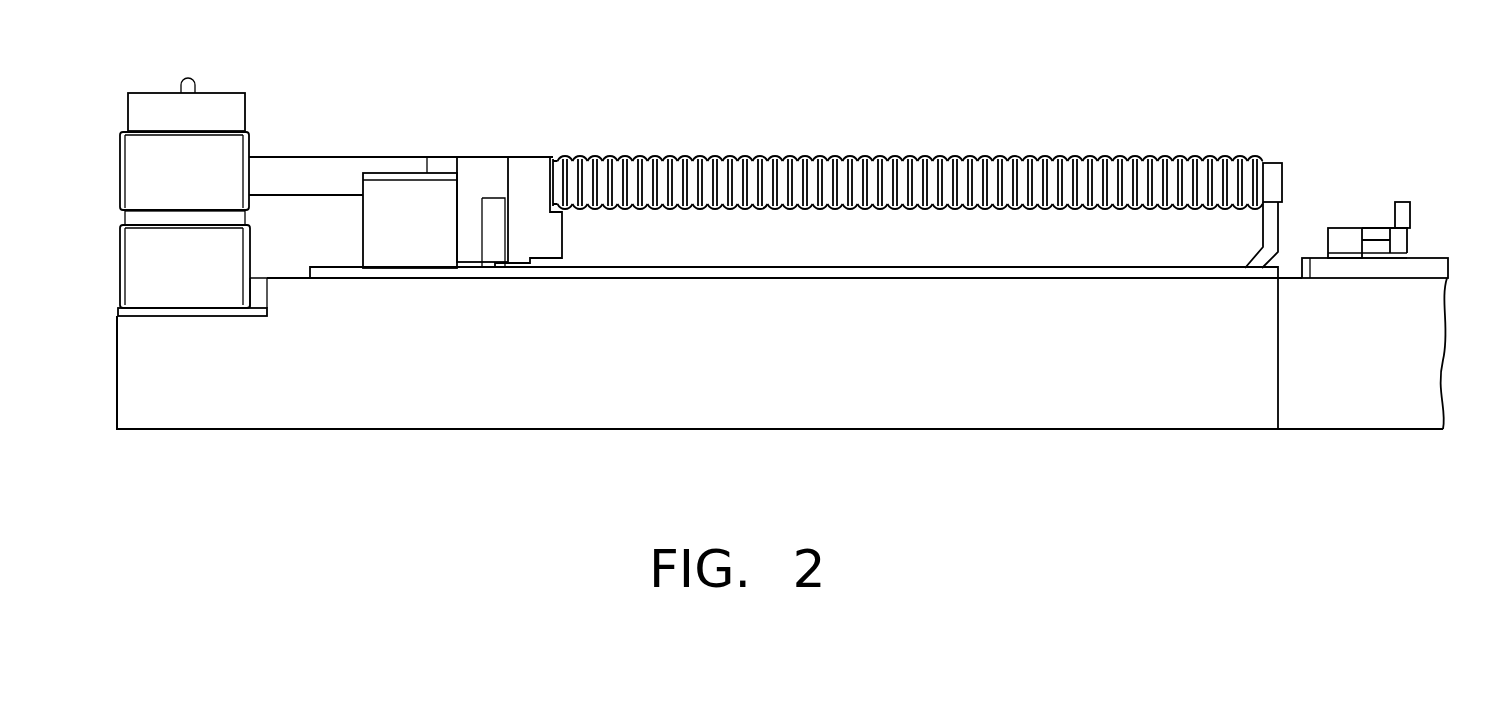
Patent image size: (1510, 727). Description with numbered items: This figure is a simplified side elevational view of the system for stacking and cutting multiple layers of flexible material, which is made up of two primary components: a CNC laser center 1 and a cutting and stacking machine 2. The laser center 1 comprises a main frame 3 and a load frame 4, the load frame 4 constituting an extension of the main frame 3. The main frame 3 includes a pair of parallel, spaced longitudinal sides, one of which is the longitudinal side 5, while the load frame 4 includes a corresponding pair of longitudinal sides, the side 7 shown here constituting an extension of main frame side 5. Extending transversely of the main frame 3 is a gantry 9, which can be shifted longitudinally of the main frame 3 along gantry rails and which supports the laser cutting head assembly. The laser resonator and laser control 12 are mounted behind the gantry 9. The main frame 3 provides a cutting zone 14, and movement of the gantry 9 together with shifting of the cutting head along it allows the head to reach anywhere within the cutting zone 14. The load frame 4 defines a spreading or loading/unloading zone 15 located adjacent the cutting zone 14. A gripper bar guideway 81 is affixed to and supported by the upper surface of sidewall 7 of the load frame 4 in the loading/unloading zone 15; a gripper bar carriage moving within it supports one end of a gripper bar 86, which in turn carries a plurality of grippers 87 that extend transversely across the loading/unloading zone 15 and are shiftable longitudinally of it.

The CNC laser center 1 is at (735, 138).
The cutting and stacking machine 2 is at (1387, 173).
The main frame 3 is at (288, 412).
The load frame 4 is at (1318, 419).
The longitudinal side 5 is at (178, 410).
The longitudinal side 7 is at (1385, 407).
The gantry 9 is at (483, 165).
The laser resonator and laser control 12 is at (225, 88).
The cutting zone 14 is at (723, 260).
The loading/unloading zone 15 is at (1420, 215).
The gripper bar guideway 81 is at (1337, 272).
The gripper bar 86 is at (1345, 233).
The gripper 87 is at (1398, 245).